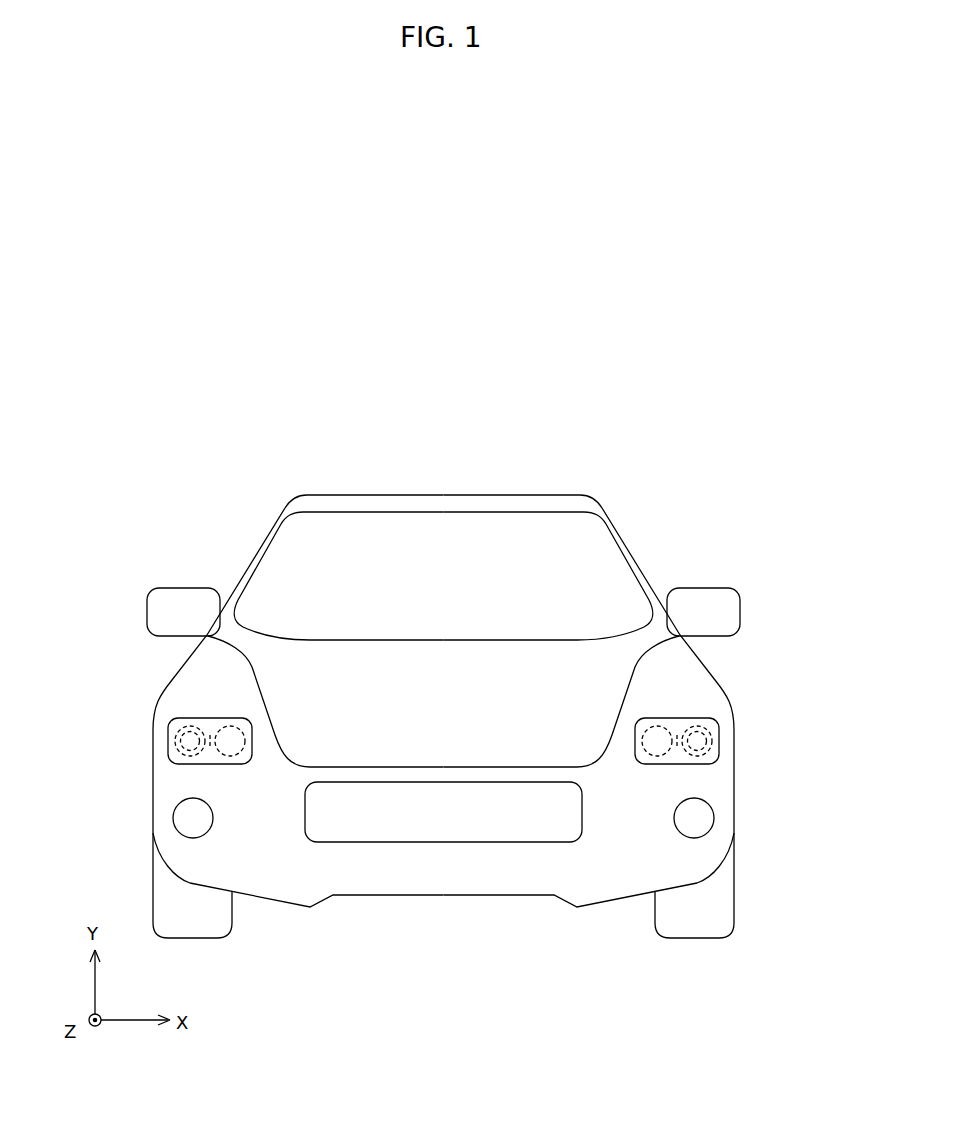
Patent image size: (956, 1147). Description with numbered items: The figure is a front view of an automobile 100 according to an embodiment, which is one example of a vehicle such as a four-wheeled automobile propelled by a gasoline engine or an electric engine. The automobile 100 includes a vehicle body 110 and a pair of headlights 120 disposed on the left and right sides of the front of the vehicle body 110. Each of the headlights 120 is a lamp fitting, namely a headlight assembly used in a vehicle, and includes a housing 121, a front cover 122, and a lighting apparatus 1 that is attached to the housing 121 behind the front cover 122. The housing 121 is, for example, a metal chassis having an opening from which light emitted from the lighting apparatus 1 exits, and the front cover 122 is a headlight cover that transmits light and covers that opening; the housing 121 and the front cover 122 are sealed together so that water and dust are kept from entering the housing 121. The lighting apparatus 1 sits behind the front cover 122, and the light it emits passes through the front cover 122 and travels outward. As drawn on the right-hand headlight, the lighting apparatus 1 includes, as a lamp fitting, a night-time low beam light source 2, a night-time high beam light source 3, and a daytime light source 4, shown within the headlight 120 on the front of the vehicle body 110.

The automobile 100 is at (748, 419).
The vehicle body 110 is at (711, 671).
The headlights 120 is at (199, 715).
The housing 121 is at (717, 719).
The front cover 122 is at (711, 740).
The lighting apparatus 1 is at (768, 745).
The night-time low beam light source 2 is at (699, 744).
The night-time high beam light source 3 is at (660, 750).
The daytime light source 4 is at (705, 755).